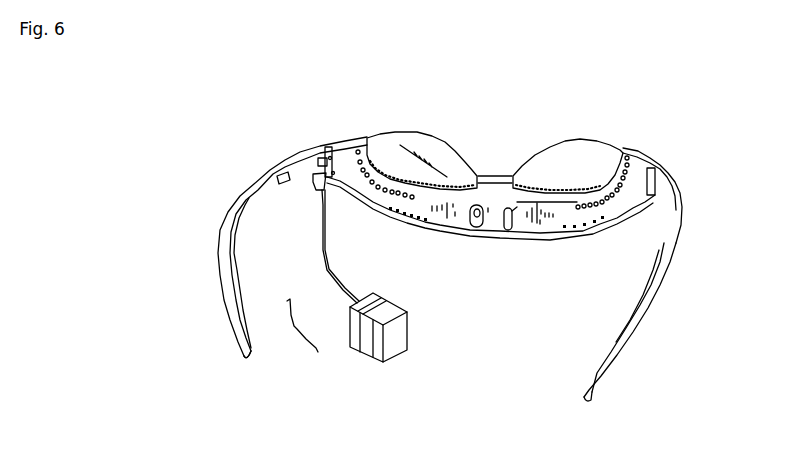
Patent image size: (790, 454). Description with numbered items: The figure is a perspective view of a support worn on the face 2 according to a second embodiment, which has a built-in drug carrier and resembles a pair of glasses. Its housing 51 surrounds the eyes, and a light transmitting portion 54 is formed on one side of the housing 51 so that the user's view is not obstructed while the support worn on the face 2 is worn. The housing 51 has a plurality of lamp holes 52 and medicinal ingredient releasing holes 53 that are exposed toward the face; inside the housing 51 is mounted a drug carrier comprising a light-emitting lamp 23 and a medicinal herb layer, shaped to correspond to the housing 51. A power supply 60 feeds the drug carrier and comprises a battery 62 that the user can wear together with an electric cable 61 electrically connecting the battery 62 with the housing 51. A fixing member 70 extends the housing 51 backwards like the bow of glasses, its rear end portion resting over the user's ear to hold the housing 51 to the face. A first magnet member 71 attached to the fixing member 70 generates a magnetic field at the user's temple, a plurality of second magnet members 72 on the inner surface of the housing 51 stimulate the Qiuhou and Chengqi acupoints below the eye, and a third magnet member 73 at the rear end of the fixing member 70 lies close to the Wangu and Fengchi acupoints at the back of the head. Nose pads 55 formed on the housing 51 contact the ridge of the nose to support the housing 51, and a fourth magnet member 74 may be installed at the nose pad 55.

The support worn on the face 2 is at (603, 122).
The light-emitting lamp 23 is at (376, 190).
The housing 51 is at (497, 234).
The lamp holes 52 is at (587, 208).
The medicinal ingredient releasing holes 53 is at (541, 222).
The light transmitting portion 54 is at (443, 150).
The nose pads 55 is at (507, 233).
The power supply 60 is at (339, 276).
The electric cable 61 is at (337, 281).
The battery 62 is at (357, 318).
The fixing member 70 is at (227, 220).
The first magnet member 71 is at (283, 173).
The second magnet members 72 is at (407, 206).
The third magnet member 73 is at (250, 341).
The fourth magnet member 74 is at (477, 230).